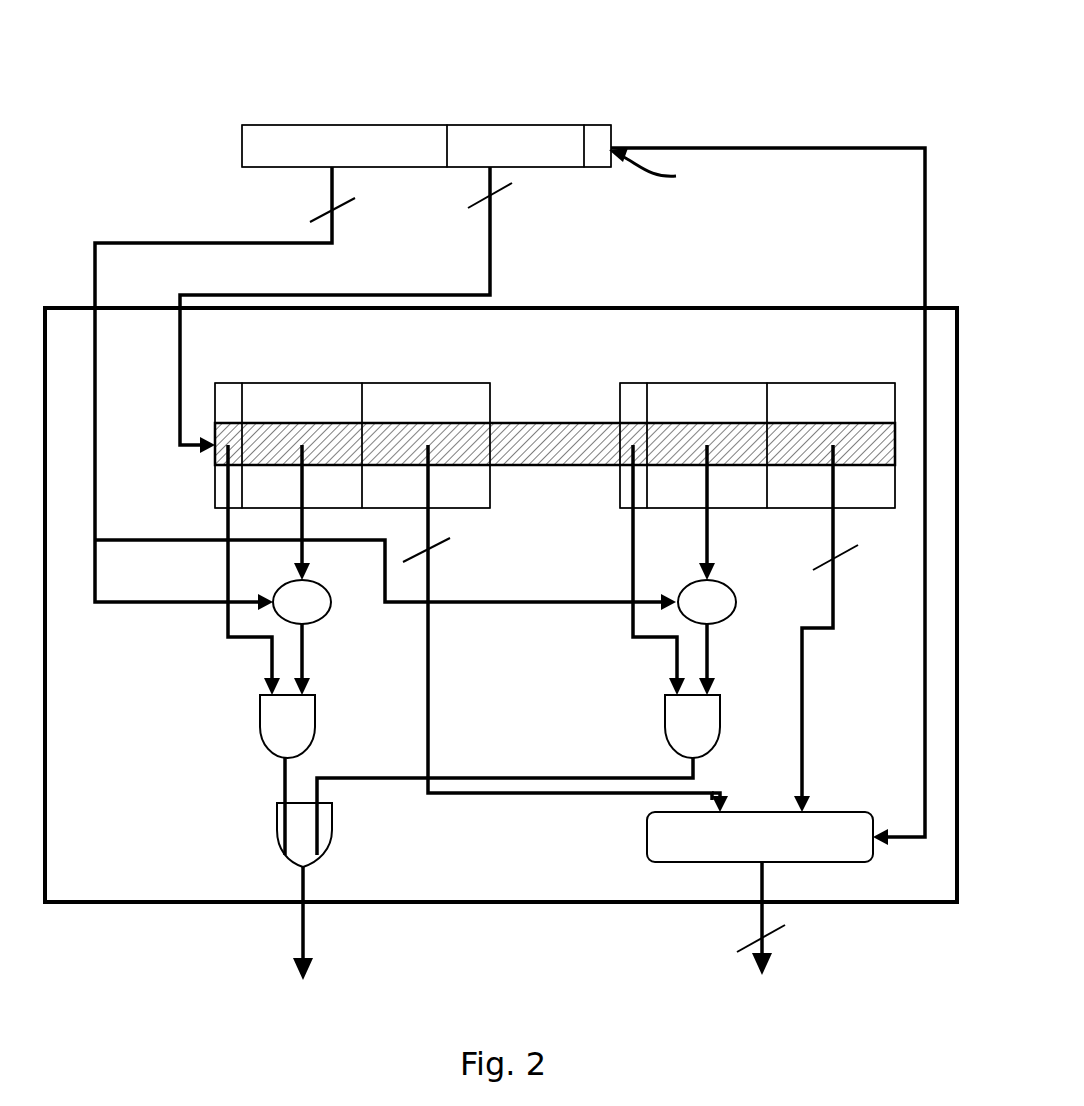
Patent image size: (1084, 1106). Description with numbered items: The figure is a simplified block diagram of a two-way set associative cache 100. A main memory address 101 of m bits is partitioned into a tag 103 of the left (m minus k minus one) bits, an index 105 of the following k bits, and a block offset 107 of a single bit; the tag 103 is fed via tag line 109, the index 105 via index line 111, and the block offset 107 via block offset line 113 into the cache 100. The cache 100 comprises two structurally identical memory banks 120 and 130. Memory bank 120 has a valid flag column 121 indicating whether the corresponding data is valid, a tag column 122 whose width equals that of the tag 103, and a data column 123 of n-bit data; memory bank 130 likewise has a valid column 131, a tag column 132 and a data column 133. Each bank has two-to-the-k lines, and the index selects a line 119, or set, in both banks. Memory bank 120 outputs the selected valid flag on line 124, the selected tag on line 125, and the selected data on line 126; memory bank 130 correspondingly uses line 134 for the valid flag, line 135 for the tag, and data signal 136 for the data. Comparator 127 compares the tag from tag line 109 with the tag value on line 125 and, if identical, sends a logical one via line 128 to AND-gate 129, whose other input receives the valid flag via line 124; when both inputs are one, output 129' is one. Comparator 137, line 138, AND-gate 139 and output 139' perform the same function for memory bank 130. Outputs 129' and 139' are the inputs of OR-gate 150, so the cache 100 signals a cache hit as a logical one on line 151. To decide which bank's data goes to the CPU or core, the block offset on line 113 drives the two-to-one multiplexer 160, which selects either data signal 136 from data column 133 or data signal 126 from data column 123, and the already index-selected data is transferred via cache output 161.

The 2-way set associative cache 100 is at (800, 308).
The main memory address 101 is at (551, 113).
The tag 103 is at (242, 145).
The index 105 is at (542, 168).
The block offset 107 is at (612, 130).
The tag line 109 is at (192, 243).
The index line 111 is at (490, 250).
The block offset line 113 is at (878, 146).
The selected line 119 is at (530, 445).
The memory bank 120 is at (713, 384).
The valid flag column 121 is at (620, 398).
The tag column 122 is at (727, 383).
The data column 123 is at (853, 383).
The valid flag output line 124 is at (633, 572).
The tag output line 125 is at (708, 520).
The data output line 126 is at (802, 665).
The comparator 127 is at (727, 617).
The comparator output line 128 is at (710, 675).
The AND-gate 129 is at (633, 726).
The AND-gate output 129' is at (505, 791).
The memory bank 130 is at (336, 387).
The valid column 131 is at (230, 383).
The tag column 132 is at (318, 382).
The data column 133 is at (490, 380).
The valid flag output line 134 is at (228, 580).
The tag output line 135 is at (302, 515).
The data signal line 136 is at (430, 640).
The comparator 137 is at (325, 617).
The comparator output line 138 is at (305, 677).
The AND-gate 139 is at (230, 715).
The AND-gate output 139' is at (227, 799).
The OR-gate 150 is at (277, 817).
The cache hit output line 151 is at (305, 930).
The 2-to-1 multiplexer 160 is at (647, 838).
The cache output 161 is at (765, 950).